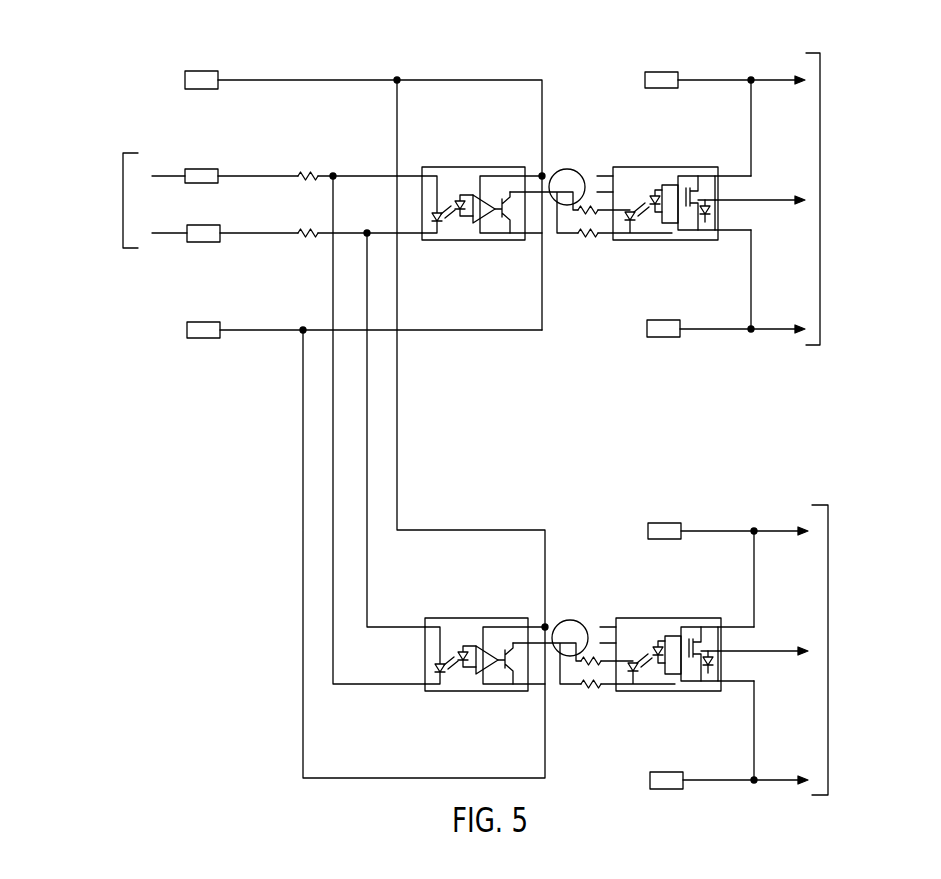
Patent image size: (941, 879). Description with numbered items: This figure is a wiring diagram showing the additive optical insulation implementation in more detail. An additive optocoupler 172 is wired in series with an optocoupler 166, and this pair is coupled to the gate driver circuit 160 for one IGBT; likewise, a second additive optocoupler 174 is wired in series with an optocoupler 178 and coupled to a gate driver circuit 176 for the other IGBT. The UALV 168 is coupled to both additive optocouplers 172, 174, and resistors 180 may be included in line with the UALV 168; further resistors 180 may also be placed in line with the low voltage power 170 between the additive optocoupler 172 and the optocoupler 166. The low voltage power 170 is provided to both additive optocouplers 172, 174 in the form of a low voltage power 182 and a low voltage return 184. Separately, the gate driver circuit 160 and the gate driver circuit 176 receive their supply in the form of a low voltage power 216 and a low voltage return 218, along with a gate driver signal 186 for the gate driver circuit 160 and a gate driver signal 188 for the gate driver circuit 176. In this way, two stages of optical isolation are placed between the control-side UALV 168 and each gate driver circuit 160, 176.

The gate driver circuit 160 is at (822, 123).
The optocoupler 166 is at (648, 167).
The UALV 168 is at (123, 207).
The low voltage power 170 is at (572, 169).
The additive optocoupler 172 is at (453, 167).
The additive optocoupler 174 is at (503, 631).
The gate driver circuit 176 is at (830, 590).
The optocoupler 178 is at (677, 635).
The resistors 180 is at (298, 172).
The low voltage power 182 is at (202, 71).
The low voltage return 184 is at (207, 338).
The gate driver signal 186 is at (770, 200).
The gate driver signal 188 is at (816, 624).
The low voltage power 216 is at (657, 72).
The low voltage return 218 is at (665, 337).